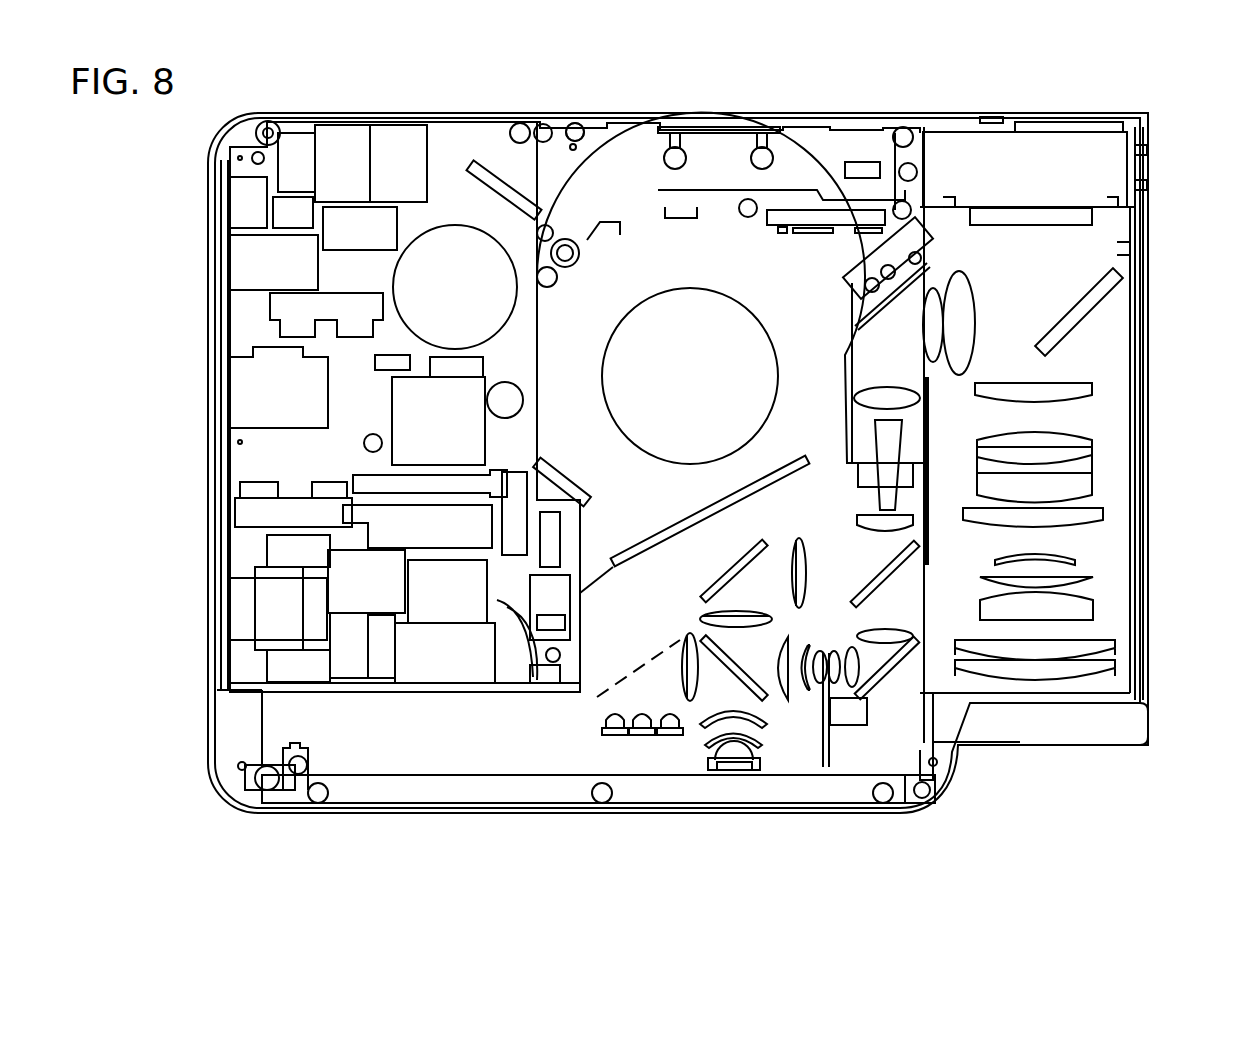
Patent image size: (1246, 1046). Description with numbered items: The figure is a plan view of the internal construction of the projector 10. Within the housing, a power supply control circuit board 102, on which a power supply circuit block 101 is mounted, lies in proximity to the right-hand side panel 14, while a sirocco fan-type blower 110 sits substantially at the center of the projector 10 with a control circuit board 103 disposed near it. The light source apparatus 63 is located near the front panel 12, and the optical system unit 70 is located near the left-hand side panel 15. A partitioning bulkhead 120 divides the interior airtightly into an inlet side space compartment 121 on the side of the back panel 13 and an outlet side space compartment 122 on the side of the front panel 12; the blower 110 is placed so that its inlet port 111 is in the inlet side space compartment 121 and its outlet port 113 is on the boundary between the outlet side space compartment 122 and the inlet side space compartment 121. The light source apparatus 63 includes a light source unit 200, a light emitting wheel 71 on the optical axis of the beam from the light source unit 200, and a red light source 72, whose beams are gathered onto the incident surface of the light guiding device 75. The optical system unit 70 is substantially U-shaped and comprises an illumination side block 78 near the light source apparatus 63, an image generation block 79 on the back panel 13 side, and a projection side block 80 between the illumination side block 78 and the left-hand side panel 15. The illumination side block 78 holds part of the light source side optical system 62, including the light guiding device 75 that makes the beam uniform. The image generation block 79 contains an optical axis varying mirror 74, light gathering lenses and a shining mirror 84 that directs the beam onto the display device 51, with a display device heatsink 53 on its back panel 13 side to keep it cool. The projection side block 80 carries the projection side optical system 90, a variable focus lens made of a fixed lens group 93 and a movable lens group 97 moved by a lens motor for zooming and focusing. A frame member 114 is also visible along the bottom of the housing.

The projector 10 is at (1152, 110).
The front panel 12 is at (470, 810).
The back panel 13 is at (481, 118).
The right-hand side panel 14 is at (210, 518).
The left-hand side panel 15 is at (1146, 256).
The display device 51 is at (1057, 213).
The display device heatsink 53 is at (962, 163).
The light source side optical system 62 is at (882, 372).
The light source apparatus 63 is at (880, 708).
The optical system unit 70 is at (1095, 366).
The light emitting wheel 71 is at (822, 745).
The red light source 72 is at (722, 770).
The optical axis varying mirror 74 is at (880, 388).
The light guiding device 75 is at (862, 320).
The illumination side block 78 is at (908, 430).
The image generation block 79 is at (942, 230).
The projection side block 80 is at (1093, 584).
The shining mirror 84 is at (1082, 312).
The projection side optical system 90 is at (1095, 534).
The fixed lens group 93 is at (1078, 462).
The movable lens group 97 is at (1105, 652).
The power supply circuit block 101 is at (260, 270).
The power supply control circuit board 102 is at (253, 553).
The control circuit board 103 is at (566, 165).
The blower 110 is at (657, 253).
The inlet port 111 is at (708, 312).
The outlet port 113 is at (658, 562).
The frame member 114 is at (430, 790).
The partitioning bulkhead 120 is at (290, 690).
The inlet side space compartment 121 is at (625, 160).
The outlet side space compartment 122 is at (398, 755).
The light source unit 200 is at (644, 740).